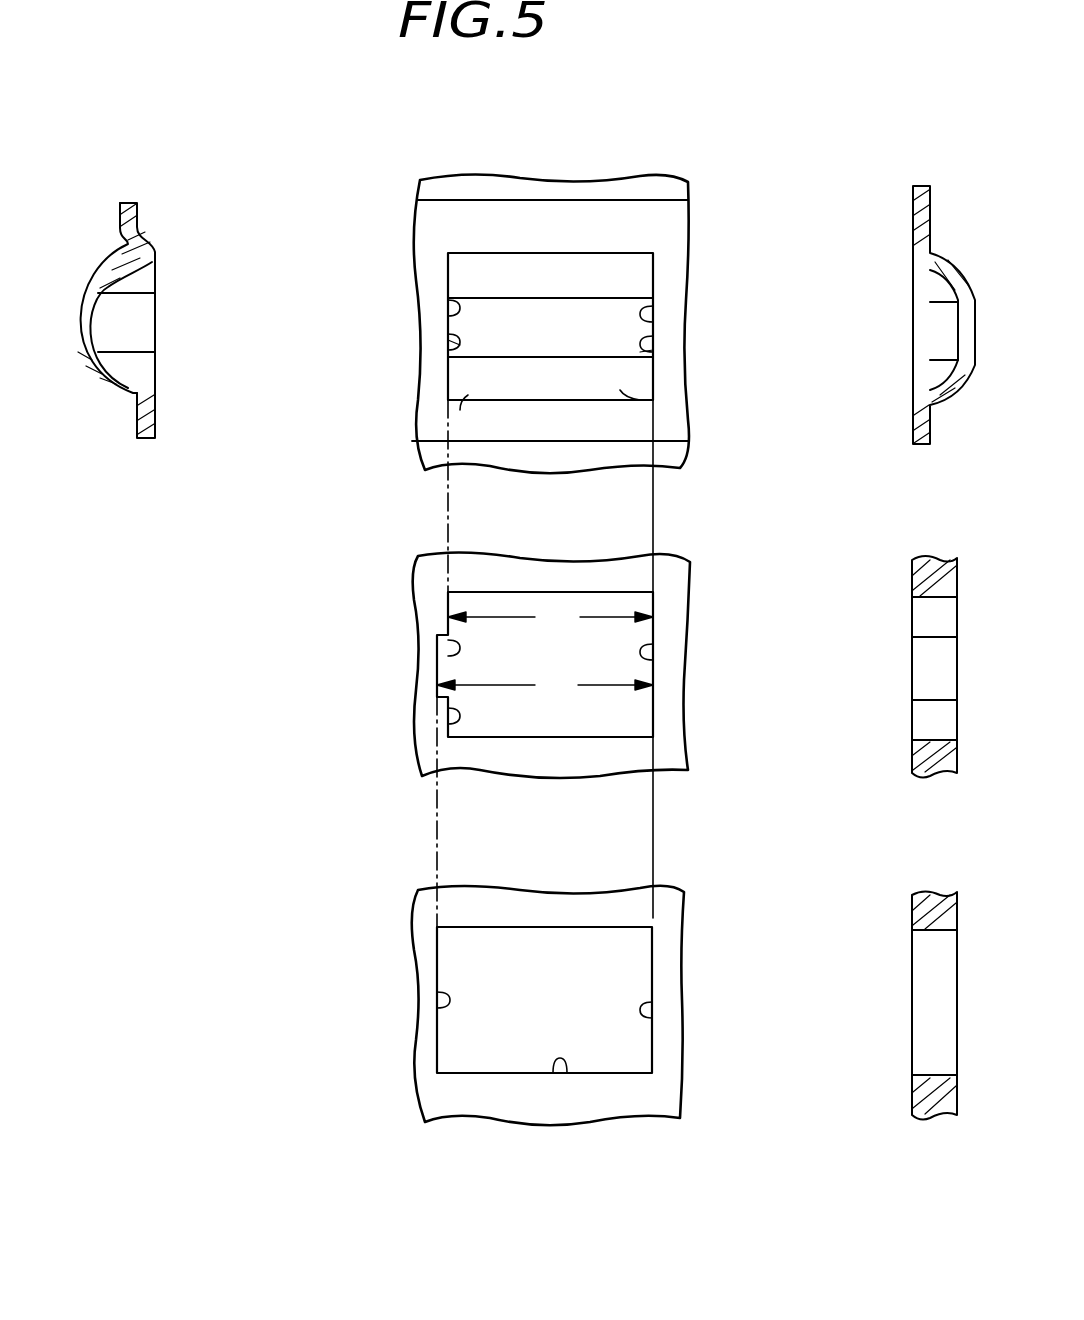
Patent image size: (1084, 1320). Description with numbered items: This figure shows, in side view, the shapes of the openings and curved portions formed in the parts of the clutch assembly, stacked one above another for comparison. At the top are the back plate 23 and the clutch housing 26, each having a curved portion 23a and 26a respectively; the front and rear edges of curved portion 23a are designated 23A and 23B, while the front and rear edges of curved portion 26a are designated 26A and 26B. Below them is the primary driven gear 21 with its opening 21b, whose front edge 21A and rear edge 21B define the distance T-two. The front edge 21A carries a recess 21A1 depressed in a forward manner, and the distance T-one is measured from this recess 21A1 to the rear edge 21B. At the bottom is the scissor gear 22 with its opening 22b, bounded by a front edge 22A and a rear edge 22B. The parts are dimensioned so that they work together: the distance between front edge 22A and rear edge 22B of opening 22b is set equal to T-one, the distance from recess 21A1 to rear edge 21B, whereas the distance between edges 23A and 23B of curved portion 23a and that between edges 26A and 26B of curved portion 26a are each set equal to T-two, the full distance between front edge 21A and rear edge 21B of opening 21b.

The back plate 23 is at (433, 212).
The clutch housing 26 is at (655, 185).
The curved portion 23a is at (465, 268).
The curved portion 26a is at (617, 276).
The front edge 23A is at (460, 312).
The rear edge 23B is at (650, 320).
The front edge 26A is at (460, 355).
The rear edge 26B is at (650, 352).
The primary driven gear 21 is at (455, 570).
The front edge 21A is at (455, 720).
The recess 21A1 is at (455, 648).
The rear edge 21B is at (640, 655).
The opening 21b is at (563, 831).
The scissor gear 22 is at (415, 940).
The front edge 22A is at (448, 1000).
The rear edge 22B is at (645, 1015).
The opening 22b is at (566, 1073).